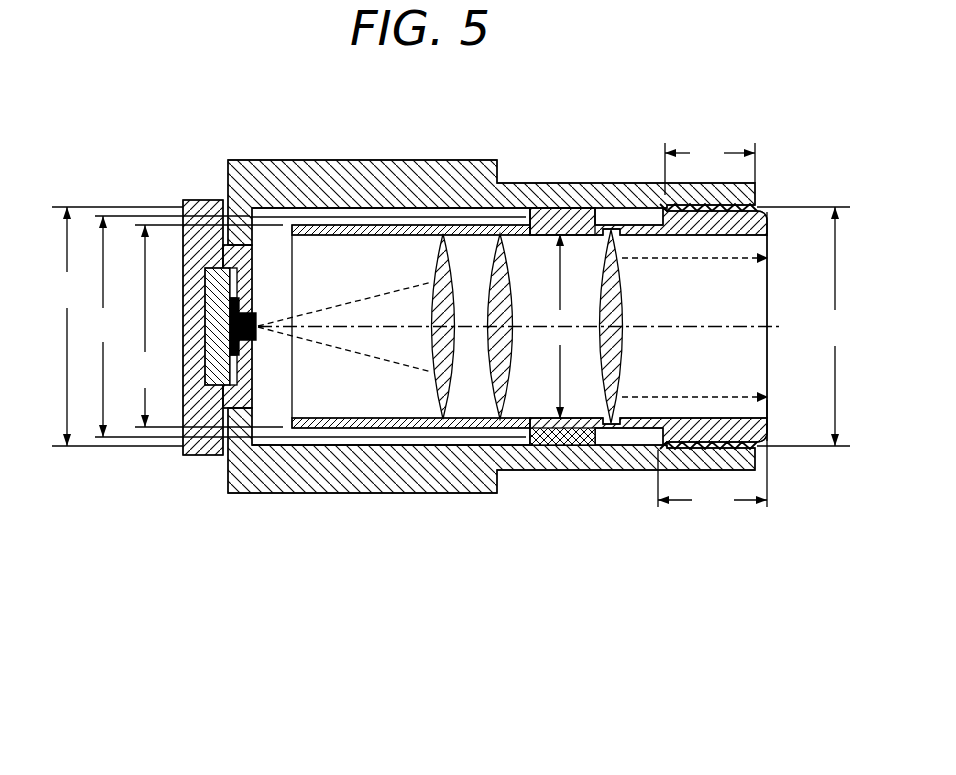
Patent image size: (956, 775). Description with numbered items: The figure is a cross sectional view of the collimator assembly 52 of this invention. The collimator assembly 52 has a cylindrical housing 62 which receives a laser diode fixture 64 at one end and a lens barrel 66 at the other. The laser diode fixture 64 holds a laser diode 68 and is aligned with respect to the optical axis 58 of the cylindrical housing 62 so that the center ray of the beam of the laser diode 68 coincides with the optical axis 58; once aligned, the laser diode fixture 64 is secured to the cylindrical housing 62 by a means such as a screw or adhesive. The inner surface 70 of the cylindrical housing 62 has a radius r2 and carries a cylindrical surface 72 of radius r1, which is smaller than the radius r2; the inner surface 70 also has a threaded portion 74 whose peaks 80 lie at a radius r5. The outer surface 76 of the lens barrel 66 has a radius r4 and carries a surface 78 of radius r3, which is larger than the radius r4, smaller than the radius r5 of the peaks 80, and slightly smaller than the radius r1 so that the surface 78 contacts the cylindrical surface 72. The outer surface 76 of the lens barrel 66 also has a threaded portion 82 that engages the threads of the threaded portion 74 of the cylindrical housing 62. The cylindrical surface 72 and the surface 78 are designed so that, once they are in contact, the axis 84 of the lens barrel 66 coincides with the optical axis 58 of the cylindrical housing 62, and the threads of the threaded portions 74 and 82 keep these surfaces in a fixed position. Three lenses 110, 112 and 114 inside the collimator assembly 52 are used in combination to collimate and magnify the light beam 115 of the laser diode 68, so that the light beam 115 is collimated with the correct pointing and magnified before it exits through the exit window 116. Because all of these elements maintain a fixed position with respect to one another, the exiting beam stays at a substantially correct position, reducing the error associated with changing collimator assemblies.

The collimator assembly 52 is at (214, 124).
The optical axis 58 is at (378, 330).
The cylindrical housing 62 is at (452, 172).
The laser diode fixture 64 is at (206, 452).
The lens barrel 66 is at (769, 432).
The laser diode 68 is at (258, 314).
The inner surface 70 is at (363, 215).
The cylindrical surface 72 is at (560, 210).
The threaded portion 74 is at (710, 167).
The outer surface 76 is at (315, 429).
The surface 78 is at (548, 440).
The peaks 80 is at (757, 203).
The threaded portion 82 is at (712, 478).
The axis 84 is at (680, 329).
The lens 110 is at (435, 388).
The lens 112 is at (492, 398).
The lens 114 is at (601, 388).
The light beam 115 is at (653, 325).
The exit window 116 is at (769, 307).
The radius of cylindrical surface r1 is at (561, 326).
The radius of inner surface r2 is at (115, 326).
The radius of surface r3 is at (170, 326).
The radius of outer surface r4 is at (207, 326).
The radius of peaks r5 is at (803, 326).